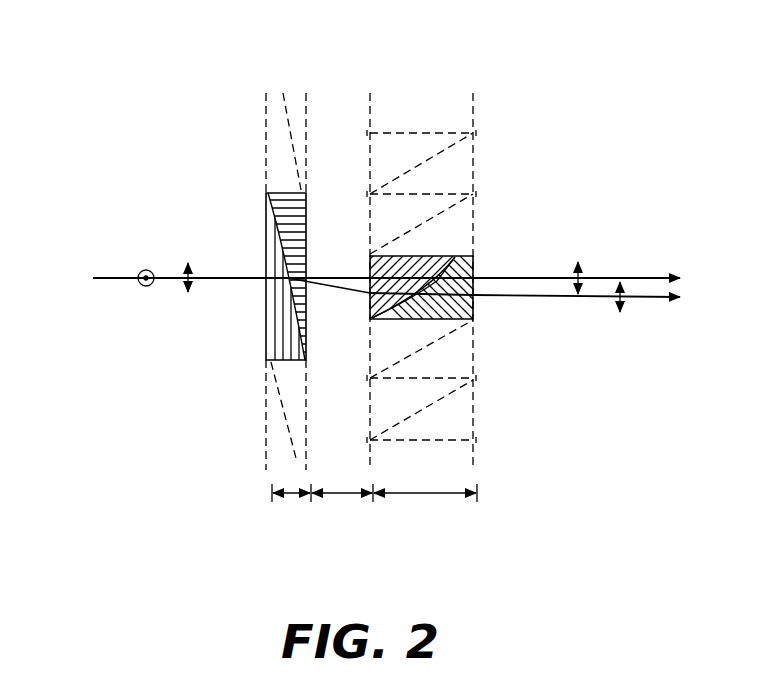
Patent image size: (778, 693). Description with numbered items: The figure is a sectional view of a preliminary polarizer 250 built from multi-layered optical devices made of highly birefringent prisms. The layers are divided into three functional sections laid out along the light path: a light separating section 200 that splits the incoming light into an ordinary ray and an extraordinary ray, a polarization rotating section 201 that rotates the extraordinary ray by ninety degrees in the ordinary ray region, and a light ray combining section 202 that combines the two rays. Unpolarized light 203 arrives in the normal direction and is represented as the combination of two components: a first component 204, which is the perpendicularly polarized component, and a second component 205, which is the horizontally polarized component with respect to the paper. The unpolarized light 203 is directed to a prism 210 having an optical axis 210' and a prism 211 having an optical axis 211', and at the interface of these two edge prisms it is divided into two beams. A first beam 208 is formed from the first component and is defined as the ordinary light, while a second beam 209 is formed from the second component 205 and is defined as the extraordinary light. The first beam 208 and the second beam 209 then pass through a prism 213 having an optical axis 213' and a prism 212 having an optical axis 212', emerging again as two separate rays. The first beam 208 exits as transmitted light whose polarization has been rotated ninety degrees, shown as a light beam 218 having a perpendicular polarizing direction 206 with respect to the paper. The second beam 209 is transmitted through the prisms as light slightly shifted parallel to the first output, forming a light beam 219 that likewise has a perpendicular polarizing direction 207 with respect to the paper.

The light separating section 200 is at (293, 496).
The polarization rotating section 201 is at (343, 494).
The light ray combining section 202 is at (423, 494).
The unpolarized light 203 is at (110, 275).
The first component 204 is at (148, 287).
The second component 205 is at (193, 282).
The perpendicular polarizing direction 206 is at (582, 272).
The perpendicular polarizing direction 207 is at (616, 305).
The first beam 208 is at (341, 276).
The second beam 209 is at (346, 287).
The prism 210 is at (250, 296).
The optical axis 210' is at (245, 415).
The prism 211 is at (248, 264).
The optical axis 211' is at (248, 138).
The prism 212 is at (425, 328).
The optical axis 212' is at (462, 310).
The prism 213 is at (439, 250).
The optical axis 213' is at (507, 252).
The light beam 218 is at (648, 275).
The light beam 219 is at (660, 300).
The preliminary polarizer 250 is at (492, 92).